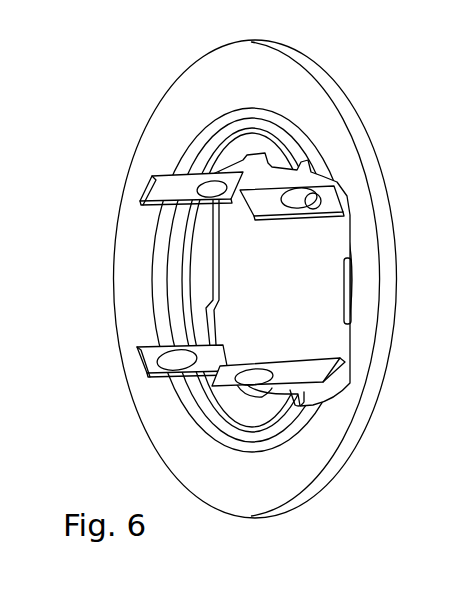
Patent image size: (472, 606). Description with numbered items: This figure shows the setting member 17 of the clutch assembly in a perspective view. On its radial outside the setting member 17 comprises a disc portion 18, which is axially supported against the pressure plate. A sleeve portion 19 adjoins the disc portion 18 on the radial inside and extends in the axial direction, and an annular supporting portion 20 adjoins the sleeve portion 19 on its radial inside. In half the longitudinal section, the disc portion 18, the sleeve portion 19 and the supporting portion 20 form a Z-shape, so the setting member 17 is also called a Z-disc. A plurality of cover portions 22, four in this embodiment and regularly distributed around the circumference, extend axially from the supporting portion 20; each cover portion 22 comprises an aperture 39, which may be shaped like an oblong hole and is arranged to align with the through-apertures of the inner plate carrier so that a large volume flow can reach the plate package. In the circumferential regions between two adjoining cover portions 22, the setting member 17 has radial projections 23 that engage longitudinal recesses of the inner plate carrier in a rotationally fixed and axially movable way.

The setting member 17 is at (157, 84).
The disc portion 18 is at (334, 117).
The sleeve portion 19 is at (173, 257).
The annular supporting portion 20 is at (197, 315).
The cover portions 22 is at (165, 192).
The radial projections 23 is at (222, 277).
The aperture 39 is at (306, 207).